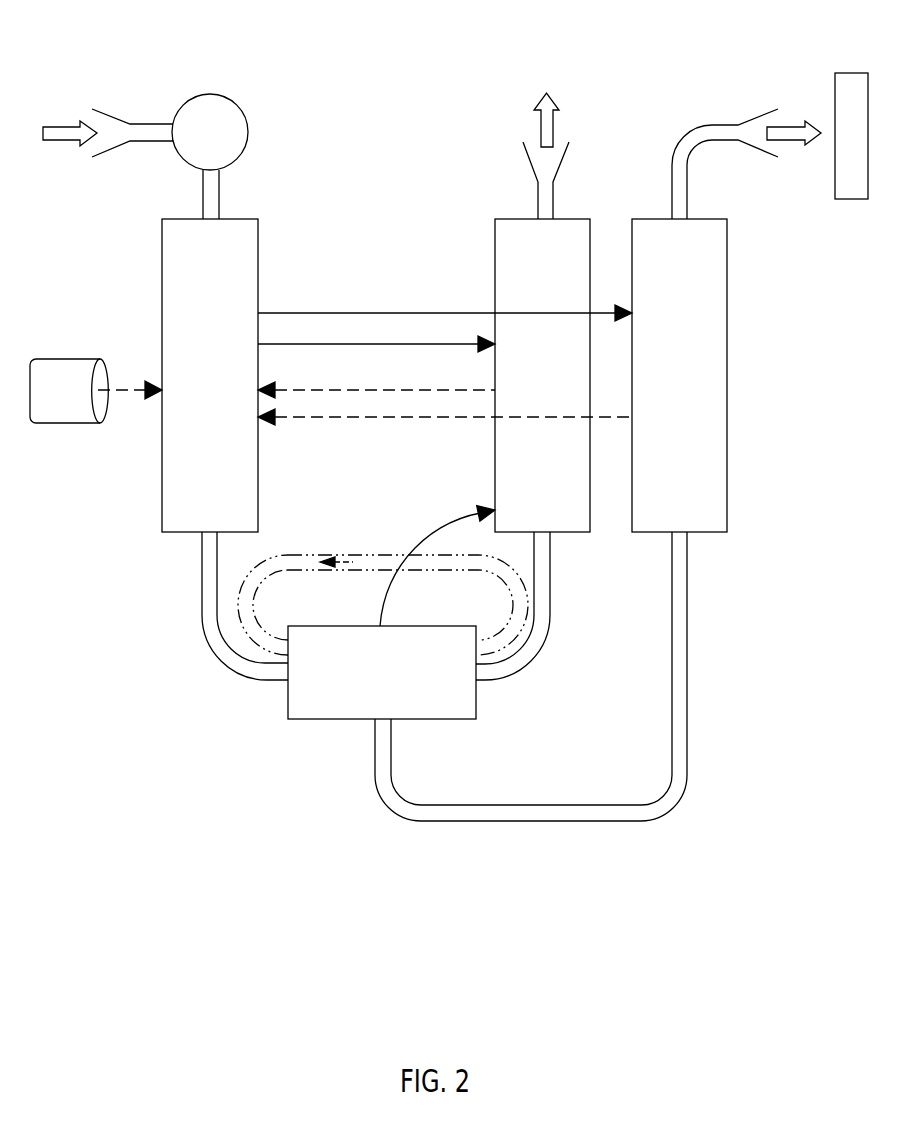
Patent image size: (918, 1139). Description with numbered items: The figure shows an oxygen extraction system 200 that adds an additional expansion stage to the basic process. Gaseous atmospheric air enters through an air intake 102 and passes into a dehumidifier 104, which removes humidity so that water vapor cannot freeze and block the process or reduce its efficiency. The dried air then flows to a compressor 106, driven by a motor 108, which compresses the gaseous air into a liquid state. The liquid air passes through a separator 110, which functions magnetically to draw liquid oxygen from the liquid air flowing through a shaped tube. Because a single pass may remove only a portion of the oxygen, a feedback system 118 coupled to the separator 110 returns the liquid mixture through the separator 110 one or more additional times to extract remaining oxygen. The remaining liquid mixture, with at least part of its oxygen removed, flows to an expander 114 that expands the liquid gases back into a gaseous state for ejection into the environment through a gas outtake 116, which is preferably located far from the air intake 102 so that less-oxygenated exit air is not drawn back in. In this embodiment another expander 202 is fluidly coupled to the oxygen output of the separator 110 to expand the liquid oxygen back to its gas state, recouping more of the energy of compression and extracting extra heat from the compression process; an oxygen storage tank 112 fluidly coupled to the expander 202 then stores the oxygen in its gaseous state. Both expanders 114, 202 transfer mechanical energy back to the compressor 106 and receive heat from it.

The oxygen extraction system 200 is at (389, 68).
The air intake 102 is at (110, 115).
The dehumidifier 104 is at (248, 127).
The compressor 106 is at (258, 277).
The motor 108 is at (80, 358).
The separator 110 is at (301, 720).
The oxygen storage tank 112 is at (835, 83).
The expander 114 is at (495, 275).
The gas outtake 116 is at (531, 170).
The feedback system 118 is at (353, 557).
The expander 202 is at (727, 286).